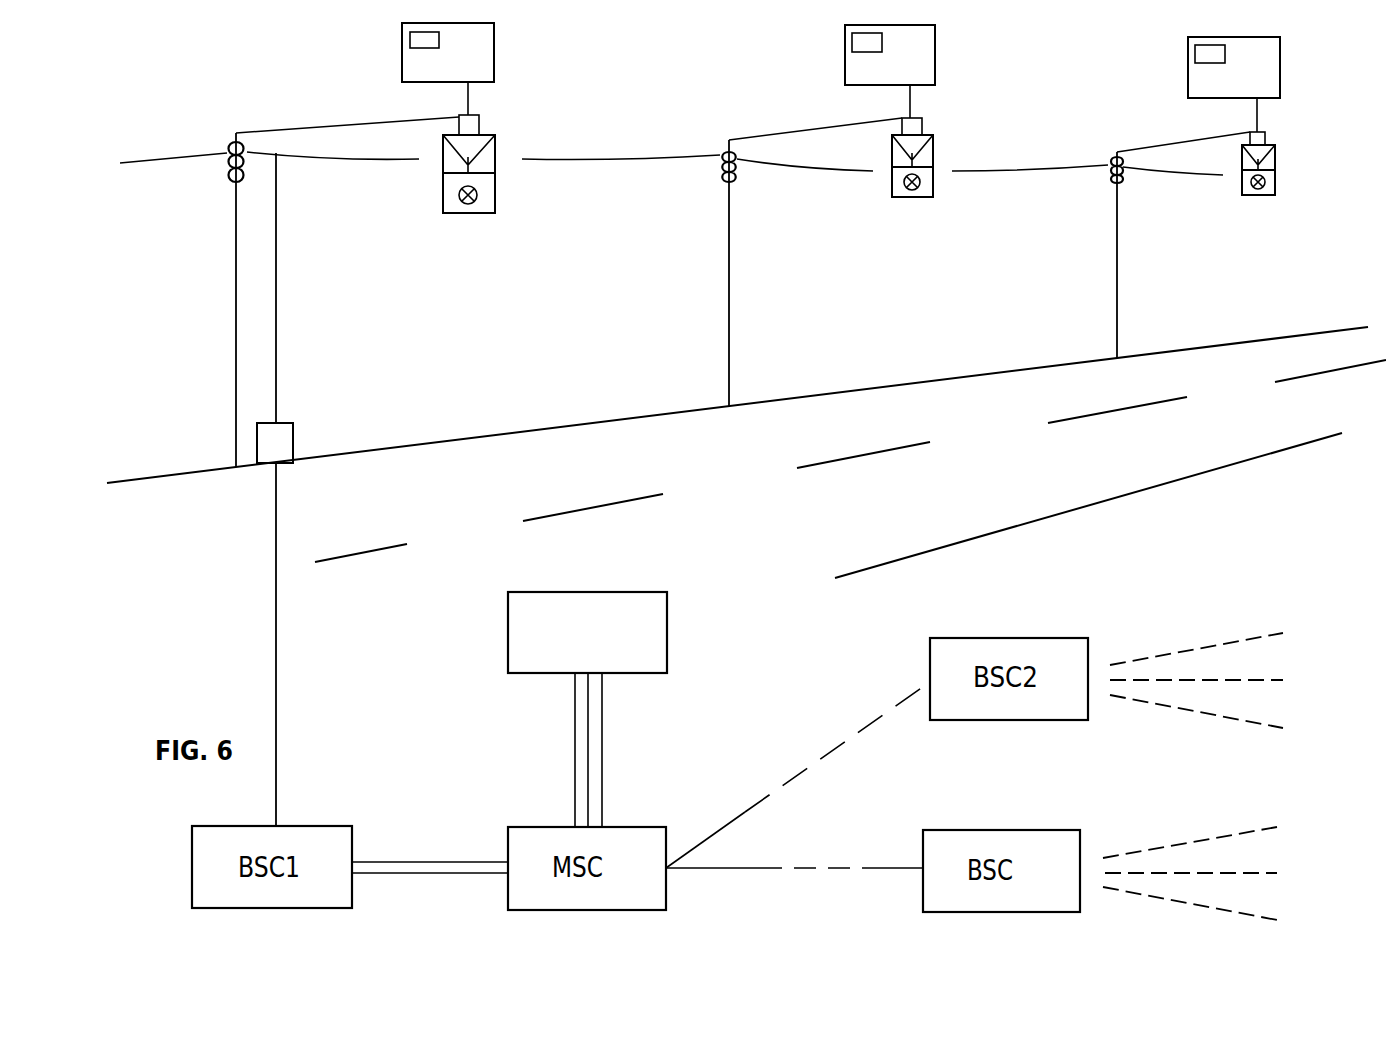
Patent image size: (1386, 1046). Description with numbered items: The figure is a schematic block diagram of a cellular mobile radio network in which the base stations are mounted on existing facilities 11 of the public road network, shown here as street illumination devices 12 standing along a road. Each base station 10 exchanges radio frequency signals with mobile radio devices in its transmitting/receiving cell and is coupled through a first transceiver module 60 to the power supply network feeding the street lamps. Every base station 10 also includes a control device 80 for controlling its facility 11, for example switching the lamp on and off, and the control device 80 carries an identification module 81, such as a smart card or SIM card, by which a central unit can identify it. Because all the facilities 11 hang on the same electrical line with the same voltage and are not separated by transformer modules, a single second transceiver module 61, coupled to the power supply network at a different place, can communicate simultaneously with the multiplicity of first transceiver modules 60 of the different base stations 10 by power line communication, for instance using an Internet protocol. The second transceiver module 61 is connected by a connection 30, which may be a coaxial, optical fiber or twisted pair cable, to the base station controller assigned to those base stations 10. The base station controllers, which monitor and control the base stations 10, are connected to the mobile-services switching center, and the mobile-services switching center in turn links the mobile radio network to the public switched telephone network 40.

The base station 10 is at (488, 155).
The facility 11 is at (236, 317).
The street illumination device 12 is at (487, 192).
The connection 30 is at (277, 698).
The public switched telephone network 40 is at (587, 709).
The first transceiver module 60 is at (472, 125).
The second transceiver module 61 is at (283, 435).
The control device 80 is at (412, 70).
The identification module 81 is at (417, 34).